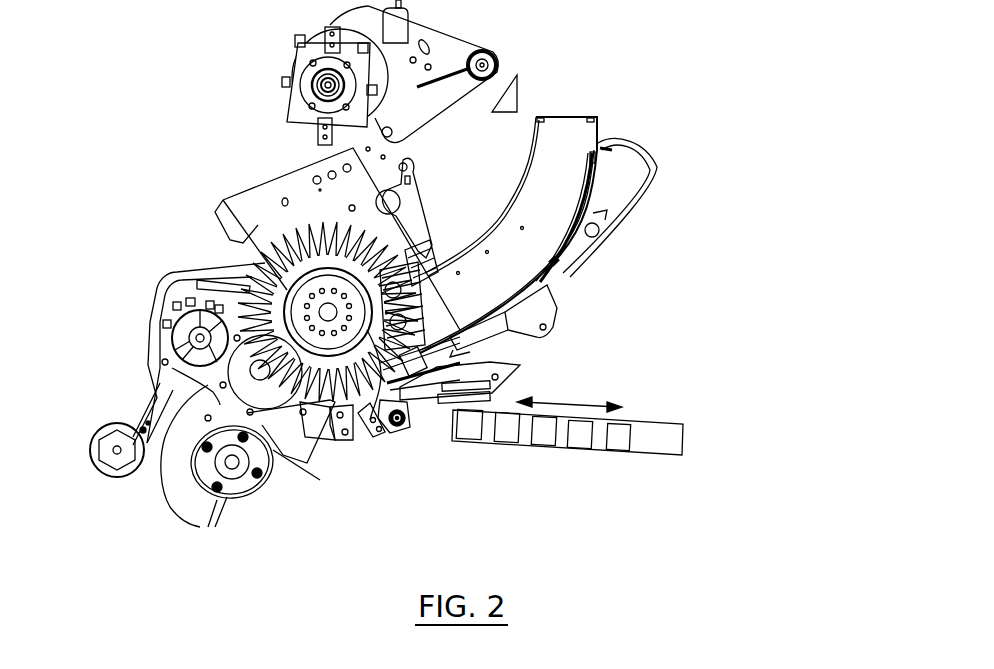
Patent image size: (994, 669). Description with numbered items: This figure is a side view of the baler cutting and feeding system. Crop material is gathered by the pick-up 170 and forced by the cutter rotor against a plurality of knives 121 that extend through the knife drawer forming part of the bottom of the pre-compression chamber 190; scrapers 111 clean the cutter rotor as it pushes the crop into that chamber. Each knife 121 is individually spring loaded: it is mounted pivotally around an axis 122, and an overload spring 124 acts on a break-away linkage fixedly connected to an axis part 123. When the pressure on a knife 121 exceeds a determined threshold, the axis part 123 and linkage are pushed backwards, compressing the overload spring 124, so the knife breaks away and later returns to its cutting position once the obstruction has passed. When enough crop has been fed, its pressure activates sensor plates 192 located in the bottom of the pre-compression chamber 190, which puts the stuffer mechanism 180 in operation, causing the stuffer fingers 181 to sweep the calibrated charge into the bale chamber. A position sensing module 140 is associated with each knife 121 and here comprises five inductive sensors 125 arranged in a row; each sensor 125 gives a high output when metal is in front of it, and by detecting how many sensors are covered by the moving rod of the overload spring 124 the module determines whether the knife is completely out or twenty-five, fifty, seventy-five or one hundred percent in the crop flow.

The scrapers 111 is at (430, 277).
The knife 121 is at (383, 430).
The axis 122 is at (340, 412).
The axis part 123 is at (413, 410).
The overload spring 124 is at (437, 393).
The inductive sensors 125 is at (590, 447).
The position sensing module 140 is at (572, 432).
The pick-up 170 is at (264, 518).
The stuffer mechanism 180 is at (496, 137).
The stuffer fingers 181 is at (408, 220).
The pre-compression chamber 190 is at (562, 265).
The sensor plates 192 is at (487, 338).